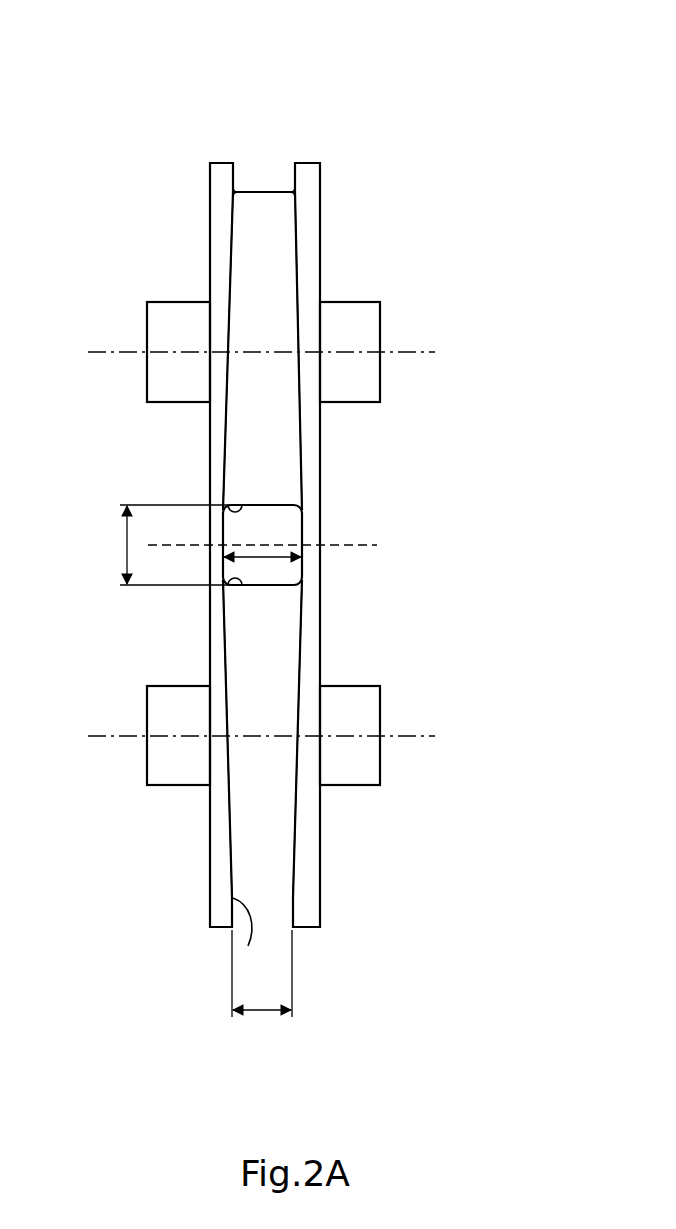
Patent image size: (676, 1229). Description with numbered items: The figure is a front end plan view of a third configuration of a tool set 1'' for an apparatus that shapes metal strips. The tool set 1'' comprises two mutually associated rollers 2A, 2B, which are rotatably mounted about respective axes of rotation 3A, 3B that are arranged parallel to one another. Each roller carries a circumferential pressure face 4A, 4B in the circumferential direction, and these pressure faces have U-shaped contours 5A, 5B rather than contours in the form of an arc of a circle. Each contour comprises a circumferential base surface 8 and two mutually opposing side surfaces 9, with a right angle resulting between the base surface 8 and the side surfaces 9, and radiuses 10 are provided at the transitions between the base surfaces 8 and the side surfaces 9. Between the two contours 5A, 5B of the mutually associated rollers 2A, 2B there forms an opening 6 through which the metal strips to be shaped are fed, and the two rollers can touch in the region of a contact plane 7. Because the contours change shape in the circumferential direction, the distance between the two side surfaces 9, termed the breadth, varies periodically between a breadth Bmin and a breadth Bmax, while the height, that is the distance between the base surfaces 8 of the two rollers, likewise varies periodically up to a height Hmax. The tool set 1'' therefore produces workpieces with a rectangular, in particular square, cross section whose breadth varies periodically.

The tool set 1'' is at (235, 536).
The roller 2A is at (157, 218).
The roller 2B is at (157, 866).
The axis of rotation 3A is at (102, 350).
The axis of rotation 3B is at (102, 738).
The circumferential pressure face 4A is at (280, 232).
The circumferential pressure face 4B is at (278, 856).
The contour 5A is at (275, 130).
The contour 5B is at (270, 935).
The opening 6 is at (283, 524).
The contact plane 7 is at (360, 542).
The base surface 8 is at (265, 191).
The side surfaces 9 is at (236, 174).
The radiuses 10 is at (241, 505).
The maximum height Hmax is at (125, 545).
The maximum breadth Bmax is at (268, 560).
The minimum breadth Bmin is at (254, 1014).